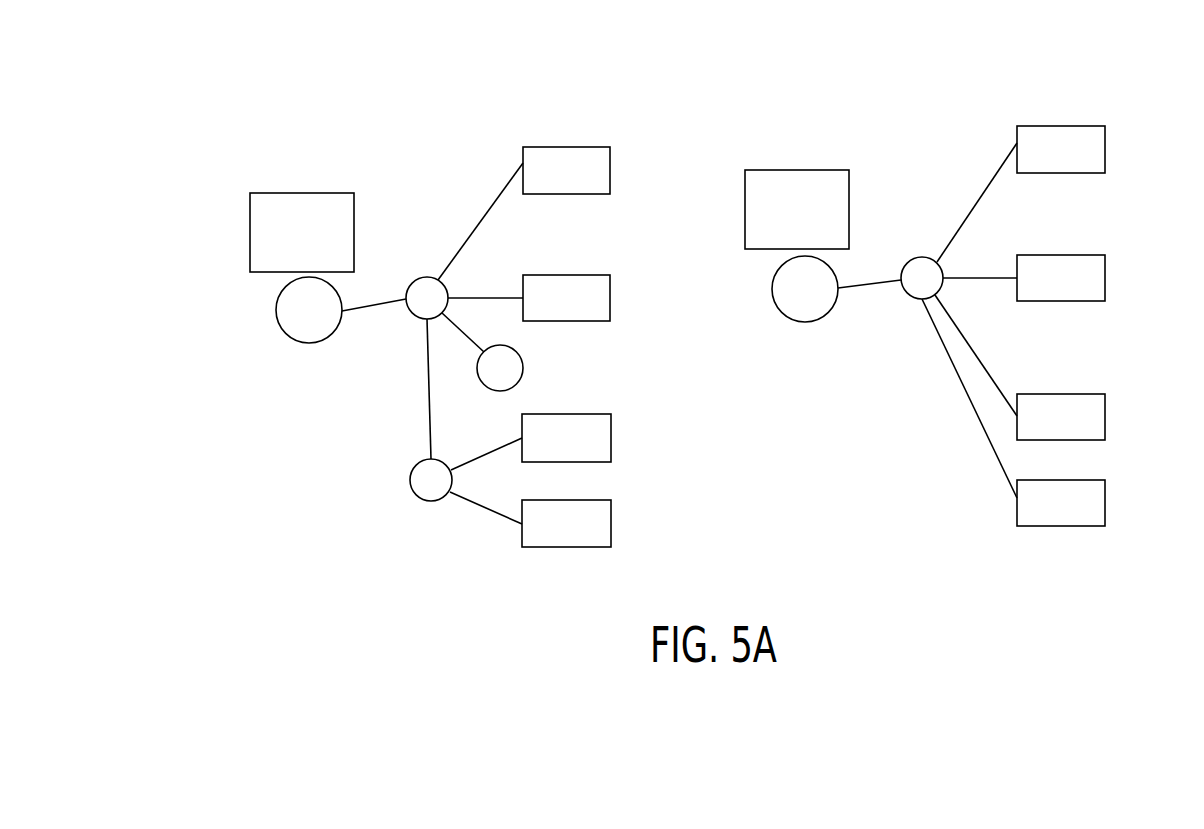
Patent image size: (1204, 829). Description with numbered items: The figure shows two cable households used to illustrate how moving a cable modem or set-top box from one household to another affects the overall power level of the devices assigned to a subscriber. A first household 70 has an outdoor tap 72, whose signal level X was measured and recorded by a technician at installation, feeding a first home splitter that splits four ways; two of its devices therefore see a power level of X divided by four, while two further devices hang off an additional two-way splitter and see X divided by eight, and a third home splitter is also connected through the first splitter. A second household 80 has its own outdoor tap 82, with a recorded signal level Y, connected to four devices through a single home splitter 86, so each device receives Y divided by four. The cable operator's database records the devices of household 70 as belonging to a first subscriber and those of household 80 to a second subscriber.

The first household 70 is at (306, 96).
The outdoor tap 72 is at (278, 321).
The second household 80 is at (866, 96).
The outdoor tap 82 is at (775, 304).
The home splitter 86 is at (920, 257).